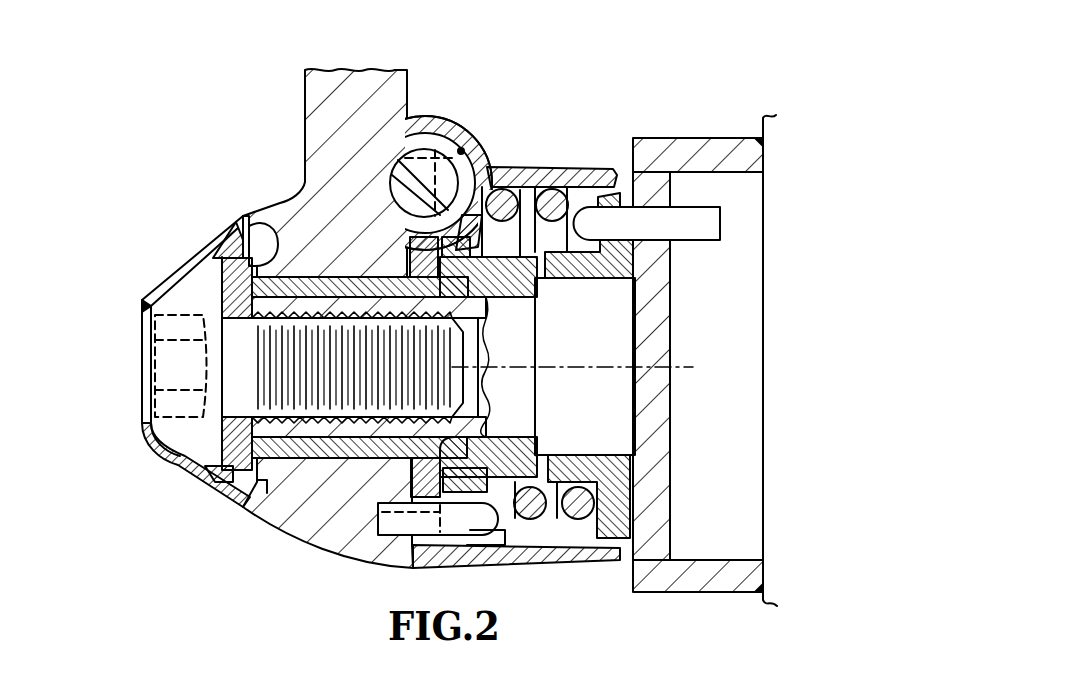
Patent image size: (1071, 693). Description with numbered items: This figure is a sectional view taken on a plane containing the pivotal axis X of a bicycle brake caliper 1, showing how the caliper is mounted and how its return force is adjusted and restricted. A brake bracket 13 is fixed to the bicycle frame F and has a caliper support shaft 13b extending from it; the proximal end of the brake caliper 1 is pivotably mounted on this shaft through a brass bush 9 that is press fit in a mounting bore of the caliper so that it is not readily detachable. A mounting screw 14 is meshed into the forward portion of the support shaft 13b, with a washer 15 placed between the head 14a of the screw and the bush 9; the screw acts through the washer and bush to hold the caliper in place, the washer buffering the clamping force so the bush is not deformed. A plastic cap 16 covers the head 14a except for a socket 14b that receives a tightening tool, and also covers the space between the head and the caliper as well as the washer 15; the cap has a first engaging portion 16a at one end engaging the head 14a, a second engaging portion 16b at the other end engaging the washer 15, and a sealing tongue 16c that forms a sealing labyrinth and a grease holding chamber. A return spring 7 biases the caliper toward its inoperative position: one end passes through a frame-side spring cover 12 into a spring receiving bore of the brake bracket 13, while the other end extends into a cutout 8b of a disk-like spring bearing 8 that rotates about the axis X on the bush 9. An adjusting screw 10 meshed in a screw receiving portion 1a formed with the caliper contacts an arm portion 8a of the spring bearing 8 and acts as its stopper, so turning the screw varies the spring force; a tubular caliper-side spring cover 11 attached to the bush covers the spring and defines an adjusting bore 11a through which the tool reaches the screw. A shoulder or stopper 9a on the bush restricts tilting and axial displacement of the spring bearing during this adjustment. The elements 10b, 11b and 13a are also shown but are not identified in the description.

The brake caliper 1 is at (303, 112).
The screw receiving portion 1a is at (433, 122).
The return spring 7 is at (590, 457).
The spring bearing 8 is at (410, 252).
The arm portion 8a is at (395, 158).
The cutout 8b is at (368, 508).
The brass bush 9 is at (310, 276).
The shoulder or stopper 9a is at (507, 297).
The adjusting screw 10 is at (397, 172).
The support pin 10b is at (647, 223).
The caliper-side spring cover 11 is at (568, 168).
The adjusting bore 11a is at (463, 150).
The ball 11b is at (483, 213).
The frame-side spring cover 12 is at (607, 267).
The brake bracket 13 is at (653, 307).
The mounting surface 13a is at (620, 403).
The caliper support shaft 13b is at (290, 437).
The mounting screw 14 is at (126, 330).
The head 14a is at (182, 433).
The socket 14b is at (163, 400).
The washer 15 is at (217, 460).
The plastic cap 16 is at (165, 260).
The first engaging portion 16a is at (142, 307).
The second engaging portion 16b is at (277, 225).
The sealing tongue 16c is at (228, 228).
The pivotal axis X is at (583, 369).
The bicycle frame F is at (763, 452).